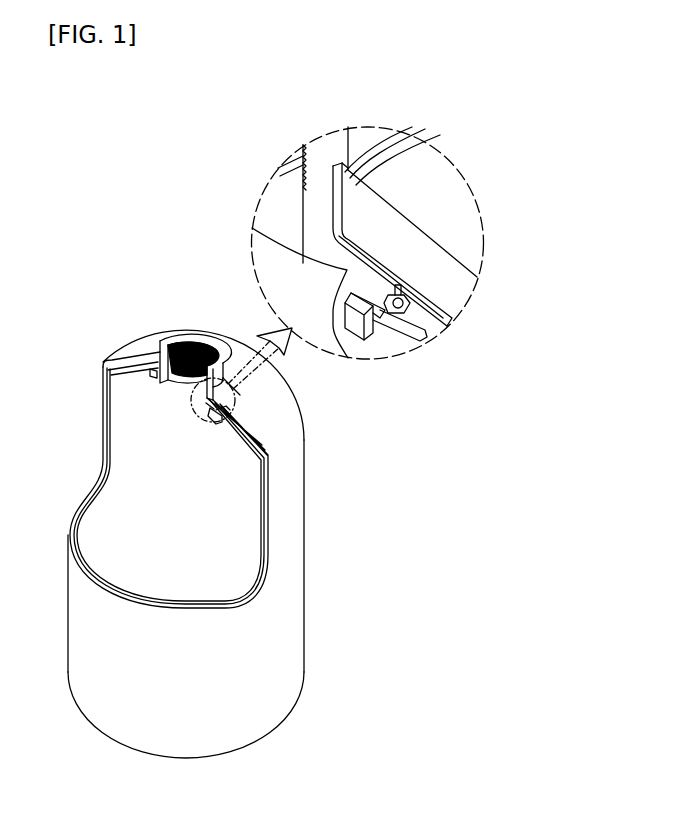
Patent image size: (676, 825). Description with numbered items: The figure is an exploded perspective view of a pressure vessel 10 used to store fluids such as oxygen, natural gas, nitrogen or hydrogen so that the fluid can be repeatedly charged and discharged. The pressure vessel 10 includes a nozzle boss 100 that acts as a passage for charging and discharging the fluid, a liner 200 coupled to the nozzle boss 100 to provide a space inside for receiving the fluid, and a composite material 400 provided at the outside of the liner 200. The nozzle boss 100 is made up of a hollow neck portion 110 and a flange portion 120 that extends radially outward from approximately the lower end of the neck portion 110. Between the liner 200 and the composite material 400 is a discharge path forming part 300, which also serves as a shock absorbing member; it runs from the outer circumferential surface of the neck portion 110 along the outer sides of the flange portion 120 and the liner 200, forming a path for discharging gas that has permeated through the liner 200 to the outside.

The pressure vessel 10 is at (79, 256).
The nozzle boss 100 is at (186, 330).
The neck portion 110 is at (157, 339).
The flange portion 120 is at (121, 353).
The liner 200 is at (248, 421).
The discharge path forming part 300 is at (240, 420).
The composite material 400 is at (267, 463).